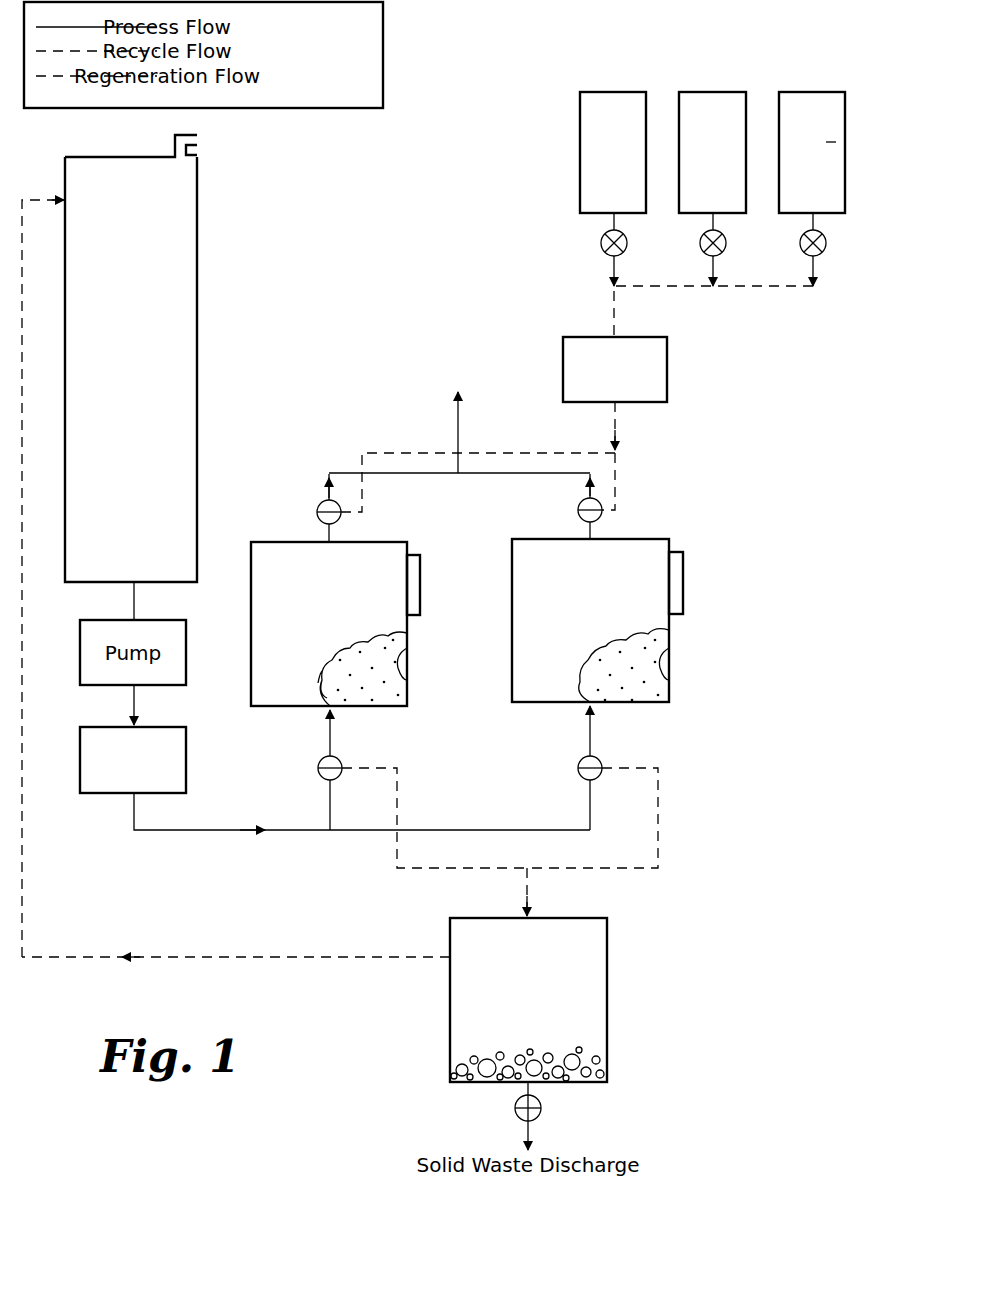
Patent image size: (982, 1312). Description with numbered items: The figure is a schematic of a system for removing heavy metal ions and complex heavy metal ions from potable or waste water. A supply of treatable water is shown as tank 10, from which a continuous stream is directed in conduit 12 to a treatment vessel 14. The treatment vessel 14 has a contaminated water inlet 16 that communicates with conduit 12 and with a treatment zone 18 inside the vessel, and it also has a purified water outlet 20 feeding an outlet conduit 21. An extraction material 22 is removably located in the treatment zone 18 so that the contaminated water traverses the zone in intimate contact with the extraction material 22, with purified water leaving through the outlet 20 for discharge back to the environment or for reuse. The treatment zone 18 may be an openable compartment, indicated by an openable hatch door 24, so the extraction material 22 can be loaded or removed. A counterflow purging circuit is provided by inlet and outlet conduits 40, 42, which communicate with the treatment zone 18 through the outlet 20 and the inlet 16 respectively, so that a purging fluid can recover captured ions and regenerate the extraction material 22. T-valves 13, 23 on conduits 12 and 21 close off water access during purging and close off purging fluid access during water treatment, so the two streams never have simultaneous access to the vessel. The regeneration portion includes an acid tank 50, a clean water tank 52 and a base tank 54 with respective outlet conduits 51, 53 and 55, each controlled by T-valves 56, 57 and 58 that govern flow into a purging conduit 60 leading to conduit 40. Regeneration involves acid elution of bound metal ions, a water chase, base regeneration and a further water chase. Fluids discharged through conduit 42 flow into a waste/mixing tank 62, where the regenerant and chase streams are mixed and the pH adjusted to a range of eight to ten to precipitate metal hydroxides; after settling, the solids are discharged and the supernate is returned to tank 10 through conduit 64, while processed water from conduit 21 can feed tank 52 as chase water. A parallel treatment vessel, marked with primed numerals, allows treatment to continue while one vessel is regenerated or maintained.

The tank 10 is at (197, 218).
The conduit 12 is at (134, 825).
The T-valve 13 is at (330, 780).
The treatment vessel 14 is at (251, 680).
The contaminated water inlet 16 is at (325, 708).
The treatment zone 18 is at (408, 653).
The purified water outlet 20 is at (325, 540).
The outlet conduit 21 is at (458, 437).
The extraction material 22 is at (375, 690).
The T-valve 23 is at (322, 505).
The openable hatch door 24 is at (420, 585).
The inlet conduit 40 is at (362, 493).
The outlet conduit 42 is at (397, 810).
The acid tank 50 is at (580, 120).
The outlet conduit 51 is at (614, 224).
The clean water tank 52 is at (679, 112).
The outlet conduit 53 is at (713, 224).
The base tank 54 is at (779, 112).
The outlet conduit 55 is at (813, 222).
The T-valve 56 is at (622, 255).
The T-valve 57 is at (724, 247).
The T-valve 58 is at (823, 250).
The purging conduit 60 is at (615, 316).
The mixing tank 62 is at (607, 1000).
The conduit 64 is at (238, 955).